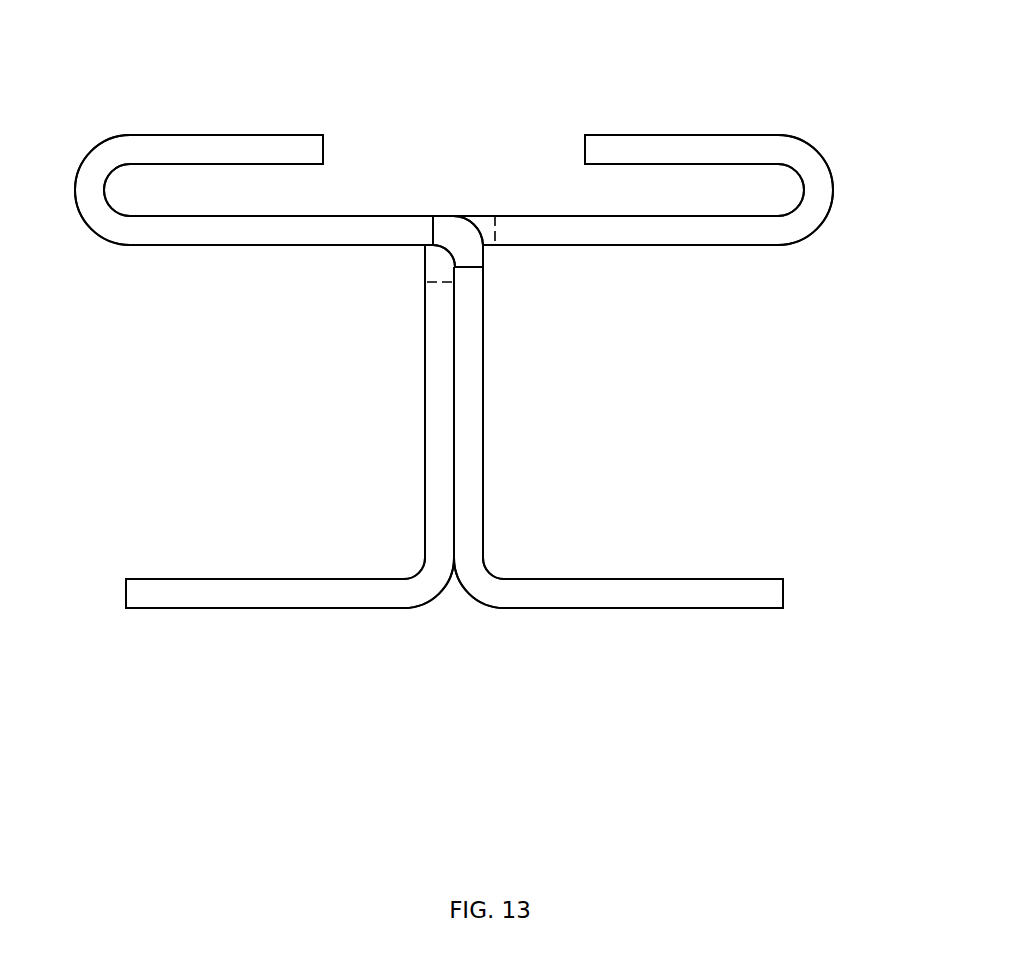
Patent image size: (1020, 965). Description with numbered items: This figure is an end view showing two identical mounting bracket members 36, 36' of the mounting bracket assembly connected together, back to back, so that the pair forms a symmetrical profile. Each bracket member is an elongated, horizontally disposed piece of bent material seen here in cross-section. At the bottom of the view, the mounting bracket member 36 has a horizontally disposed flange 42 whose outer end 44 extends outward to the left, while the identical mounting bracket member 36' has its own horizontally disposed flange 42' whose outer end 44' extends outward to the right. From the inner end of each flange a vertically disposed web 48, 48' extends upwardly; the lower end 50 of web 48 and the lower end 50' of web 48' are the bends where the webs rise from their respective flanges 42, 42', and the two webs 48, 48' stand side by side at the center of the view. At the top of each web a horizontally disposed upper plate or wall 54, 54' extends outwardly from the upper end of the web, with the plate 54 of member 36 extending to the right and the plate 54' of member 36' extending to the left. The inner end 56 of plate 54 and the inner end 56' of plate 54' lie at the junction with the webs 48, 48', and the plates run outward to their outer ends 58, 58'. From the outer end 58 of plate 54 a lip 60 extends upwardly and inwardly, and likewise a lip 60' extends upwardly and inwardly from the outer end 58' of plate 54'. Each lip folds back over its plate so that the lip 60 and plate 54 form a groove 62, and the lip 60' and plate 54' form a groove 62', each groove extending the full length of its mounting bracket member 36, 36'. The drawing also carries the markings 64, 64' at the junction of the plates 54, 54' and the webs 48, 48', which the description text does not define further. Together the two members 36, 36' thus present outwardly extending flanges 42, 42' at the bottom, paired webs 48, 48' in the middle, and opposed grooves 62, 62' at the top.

The mounting bracket member 36 is at (657, 371).
The mounting bracket member 36' is at (265, 371).
The horizontally disposed flange 42 is at (265, 541).
The horizontally disposed flange 42' is at (643, 540).
The outer end of flange 44 is at (81, 622).
The outer end of flange 44' is at (827, 558).
The vertically disposed web 48 is at (388, 401).
The vertically disposed web 48' is at (560, 401).
The lower end of web 50 is at (429, 622).
The lower end of web 50' is at (524, 547).
The horizontally disposed upper plate 54 is at (616, 285).
The horizontally disposed upper plate 54' is at (292, 146).
The inner end of upper plate 56 is at (532, 276).
The inner end of upper plate 56' is at (435, 174).
The outer end of upper plate 58 is at (844, 207).
The outer end of upper plate 58' is at (93, 239).
The lip 60 is at (681, 102).
The lip 60' is at (230, 84).
The groove 62 is at (708, 115).
The groove 62' is at (223, 106).
The bend line 64 is at (471, 183).
The bend line 64' is at (494, 172).